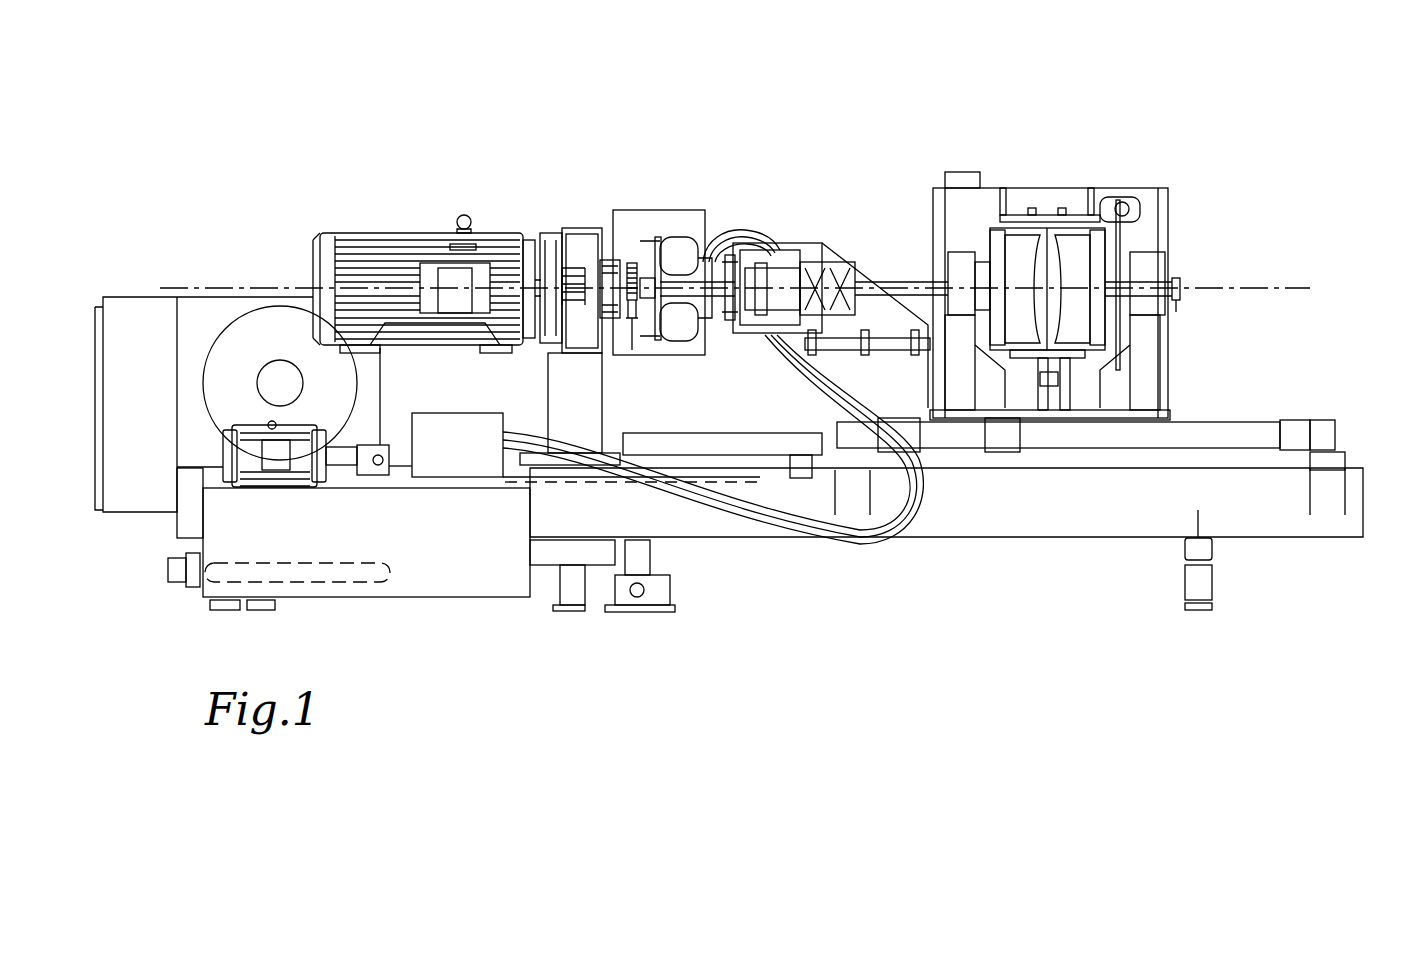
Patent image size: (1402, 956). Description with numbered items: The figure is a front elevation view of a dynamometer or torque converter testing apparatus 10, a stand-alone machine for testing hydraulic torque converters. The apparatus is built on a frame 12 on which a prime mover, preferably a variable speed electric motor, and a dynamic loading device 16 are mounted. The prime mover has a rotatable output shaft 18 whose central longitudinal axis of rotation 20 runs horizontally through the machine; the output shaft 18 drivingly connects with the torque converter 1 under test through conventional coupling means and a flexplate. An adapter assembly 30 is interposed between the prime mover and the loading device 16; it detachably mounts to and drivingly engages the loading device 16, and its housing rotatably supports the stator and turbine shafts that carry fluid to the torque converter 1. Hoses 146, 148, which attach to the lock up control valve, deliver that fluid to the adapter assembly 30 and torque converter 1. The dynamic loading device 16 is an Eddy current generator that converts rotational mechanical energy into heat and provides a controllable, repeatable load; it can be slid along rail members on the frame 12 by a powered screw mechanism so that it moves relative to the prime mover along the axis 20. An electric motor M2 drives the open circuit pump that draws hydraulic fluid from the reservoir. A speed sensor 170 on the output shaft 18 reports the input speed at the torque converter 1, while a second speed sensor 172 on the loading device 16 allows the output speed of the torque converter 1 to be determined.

The dynamometer or torque converter testing apparatus 10 is at (258, 112).
The central longitudinal axis of rotation 20 is at (280, 288).
The electric motor M2 is at (222, 455).
The output shaft 18 is at (597, 268).
The speed sensor 170 is at (628, 325).
The torque converter 1 is at (673, 233).
The hose 148 is at (727, 236).
The hose 146 is at (742, 242).
The adapter assembly 30 is at (715, 312).
The dynamic loading device 16 is at (1098, 148).
The speed sensor 172 is at (1180, 298).
The frame 12 is at (947, 522).